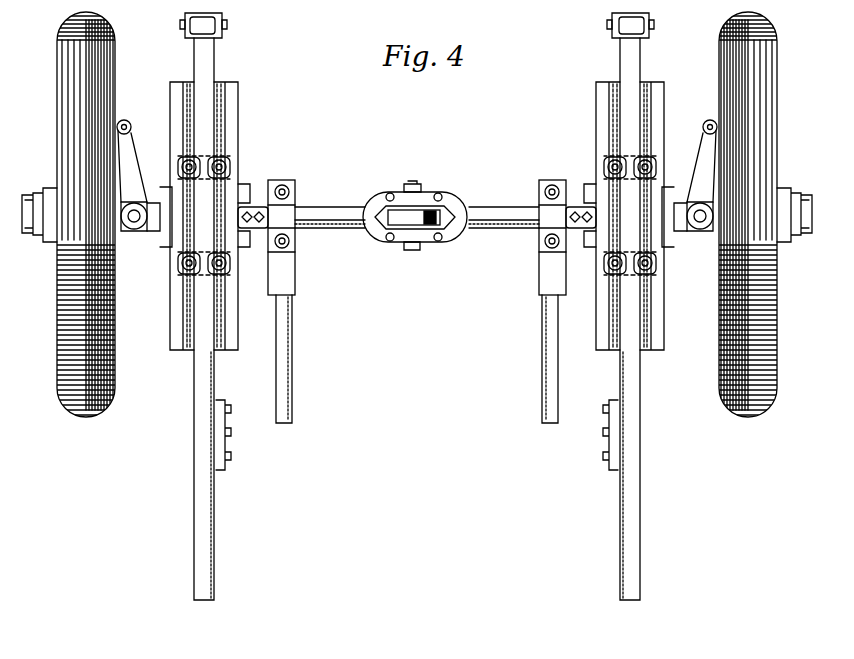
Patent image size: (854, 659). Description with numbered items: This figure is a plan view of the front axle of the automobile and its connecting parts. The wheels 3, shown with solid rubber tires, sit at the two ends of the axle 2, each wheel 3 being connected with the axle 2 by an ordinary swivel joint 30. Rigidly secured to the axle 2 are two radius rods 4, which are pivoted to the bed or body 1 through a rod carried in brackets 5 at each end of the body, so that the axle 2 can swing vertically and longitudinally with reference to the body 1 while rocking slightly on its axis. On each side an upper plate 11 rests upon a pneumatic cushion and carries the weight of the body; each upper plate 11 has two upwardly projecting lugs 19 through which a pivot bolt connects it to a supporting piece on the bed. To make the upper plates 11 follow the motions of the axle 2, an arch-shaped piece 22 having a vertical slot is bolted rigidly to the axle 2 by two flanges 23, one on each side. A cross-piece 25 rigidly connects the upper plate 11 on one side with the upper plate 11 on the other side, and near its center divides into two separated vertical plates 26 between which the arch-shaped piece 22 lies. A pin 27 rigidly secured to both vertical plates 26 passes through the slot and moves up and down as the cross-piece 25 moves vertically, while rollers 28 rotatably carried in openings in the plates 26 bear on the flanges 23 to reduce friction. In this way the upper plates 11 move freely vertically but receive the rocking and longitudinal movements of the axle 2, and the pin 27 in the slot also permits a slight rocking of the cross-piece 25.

The bed or body 1 is at (207, 565).
The axle 2 is at (511, 207).
The wheel 3 is at (93, 418).
The radius rod 4 is at (292, 401).
The bracket 5 is at (226, 449).
The upper plate 11 is at (216, 83).
The upwardly projecting lug 19 is at (186, 265).
The arch-shaped piece 22 is at (466, 208).
The flange 23 is at (387, 194).
The cross-piece 25 is at (322, 214).
The vertical plate 26 is at (427, 194).
The pin 27 is at (412, 251).
The roller 28 is at (411, 184).
The swivel joint 30 is at (133, 230).